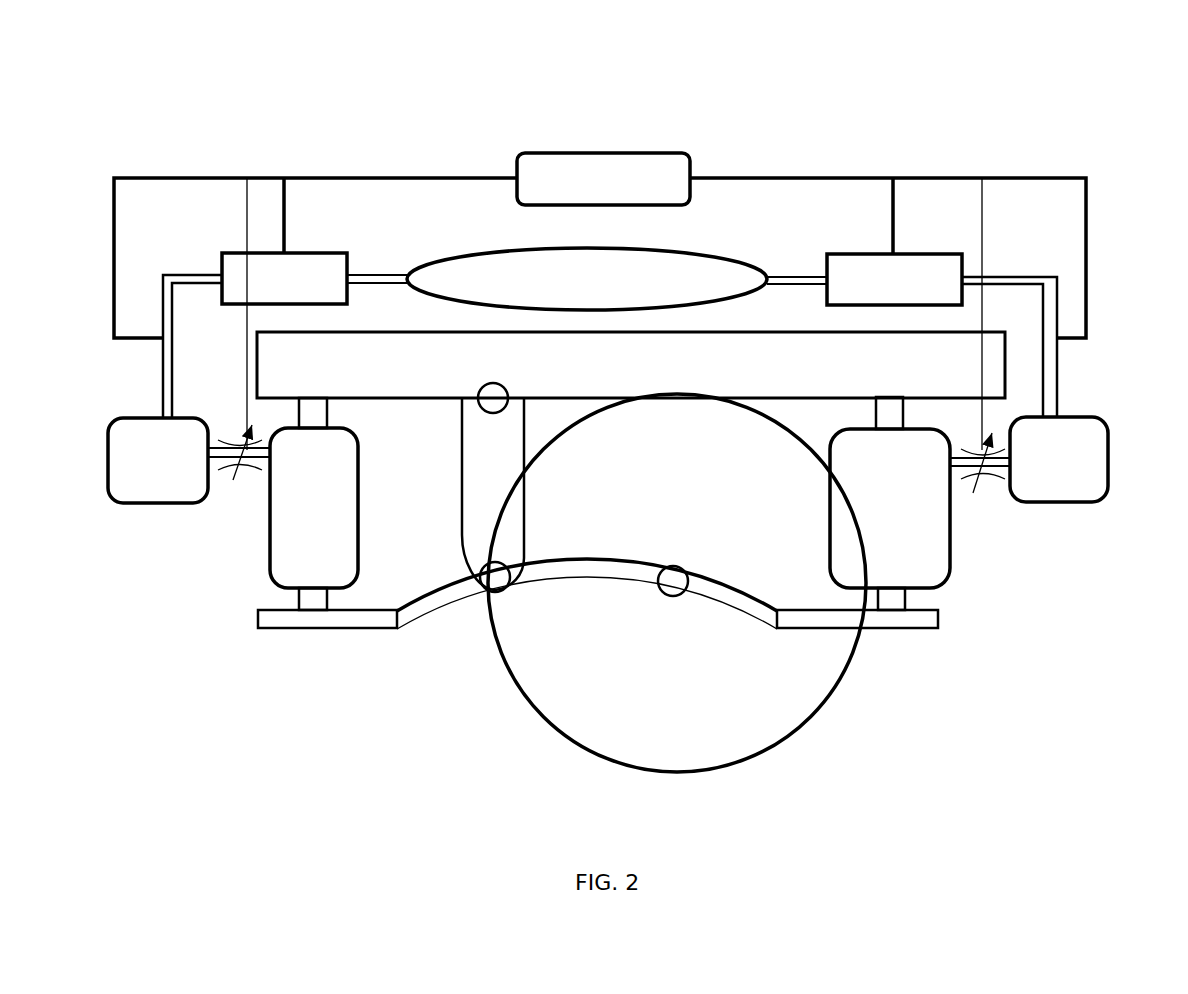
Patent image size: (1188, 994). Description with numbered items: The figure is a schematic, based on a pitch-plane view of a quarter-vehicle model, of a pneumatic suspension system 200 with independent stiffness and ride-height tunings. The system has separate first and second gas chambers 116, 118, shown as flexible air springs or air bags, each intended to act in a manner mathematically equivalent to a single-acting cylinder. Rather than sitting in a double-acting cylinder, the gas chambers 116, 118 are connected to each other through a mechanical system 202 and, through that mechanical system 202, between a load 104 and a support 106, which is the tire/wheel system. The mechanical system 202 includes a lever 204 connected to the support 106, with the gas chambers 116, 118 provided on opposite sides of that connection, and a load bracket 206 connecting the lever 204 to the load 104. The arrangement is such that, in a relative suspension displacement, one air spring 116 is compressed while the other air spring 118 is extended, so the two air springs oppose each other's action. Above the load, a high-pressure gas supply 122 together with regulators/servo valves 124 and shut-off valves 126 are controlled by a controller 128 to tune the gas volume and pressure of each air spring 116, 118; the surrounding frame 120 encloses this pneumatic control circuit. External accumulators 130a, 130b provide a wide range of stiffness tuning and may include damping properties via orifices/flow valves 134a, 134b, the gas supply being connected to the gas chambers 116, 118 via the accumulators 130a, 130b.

The frame 120 is at (280, 162).
The controller 128 is at (617, 153).
The regulators/servo valves 124 is at (300, 252).
The high-pressure gas supply 122 is at (672, 250).
The shut-off valves 126 is at (170, 339).
The load 104 is at (607, 373).
The external accumulator 130a is at (107, 462).
The external accumulator 130b is at (1110, 466).
The orifices/flow valves 134a is at (238, 462).
The orifices/flow valves 134b is at (987, 478).
The first gas chamber 116 is at (266, 535).
The second gas chamber 118 is at (952, 535).
The load bracket 206 is at (484, 467).
The lever 204 is at (382, 628).
The mechanical system 202 is at (312, 668).
The pneumatic suspension system 200 is at (175, 653).
The support 106 is at (857, 684).